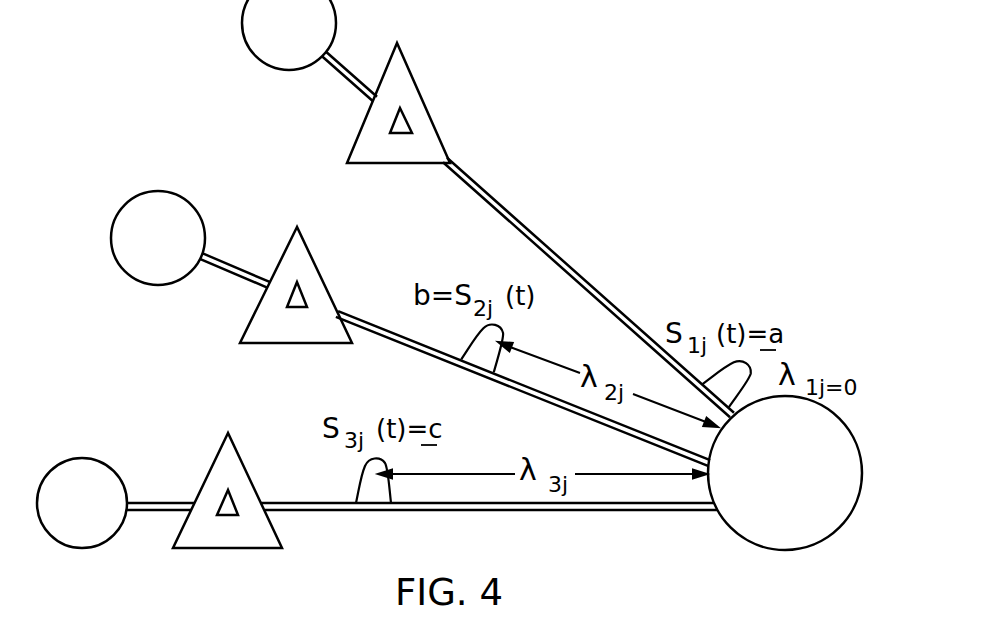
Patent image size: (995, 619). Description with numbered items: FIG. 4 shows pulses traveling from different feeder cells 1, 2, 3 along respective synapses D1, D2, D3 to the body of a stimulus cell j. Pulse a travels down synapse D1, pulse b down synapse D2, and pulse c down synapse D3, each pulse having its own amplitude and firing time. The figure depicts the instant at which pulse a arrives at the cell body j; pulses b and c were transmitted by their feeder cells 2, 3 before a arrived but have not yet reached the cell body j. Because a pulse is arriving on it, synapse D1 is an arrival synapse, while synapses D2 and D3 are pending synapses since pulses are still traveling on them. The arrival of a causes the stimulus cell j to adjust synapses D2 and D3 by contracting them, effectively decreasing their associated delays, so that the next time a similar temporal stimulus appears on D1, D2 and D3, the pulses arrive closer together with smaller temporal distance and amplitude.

The input node 1 is at (289, 35).
The input node 2 is at (158, 238).
The input node 3 is at (82, 503).
The synapse D1 is at (375, 164).
The synapse D2 is at (272, 344).
The synapse D3 is at (205, 550).
The cell body j is at (785, 473).